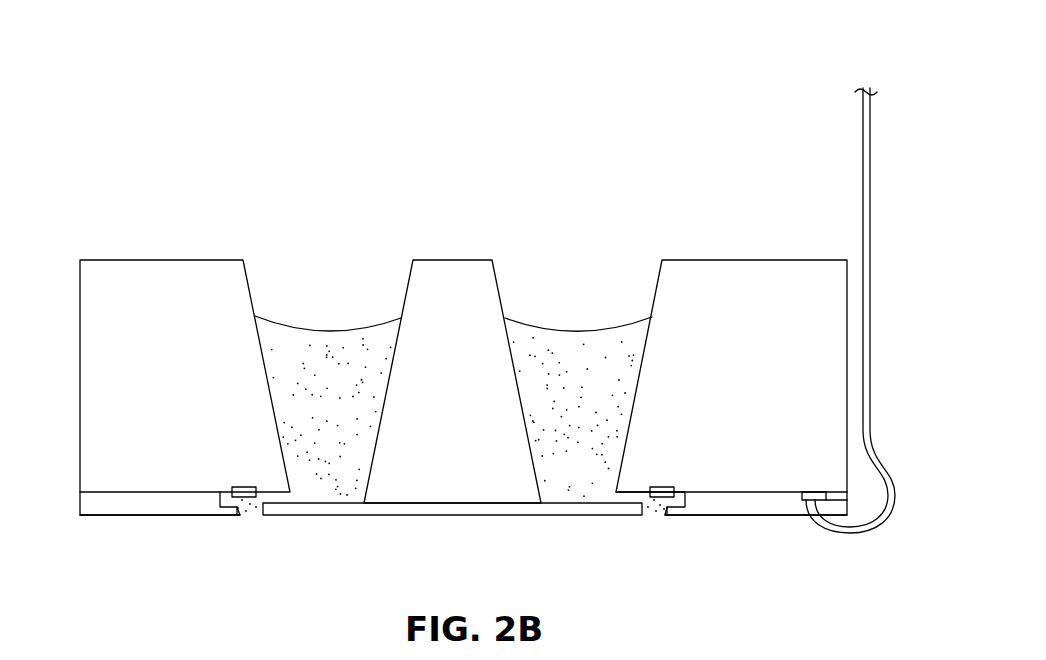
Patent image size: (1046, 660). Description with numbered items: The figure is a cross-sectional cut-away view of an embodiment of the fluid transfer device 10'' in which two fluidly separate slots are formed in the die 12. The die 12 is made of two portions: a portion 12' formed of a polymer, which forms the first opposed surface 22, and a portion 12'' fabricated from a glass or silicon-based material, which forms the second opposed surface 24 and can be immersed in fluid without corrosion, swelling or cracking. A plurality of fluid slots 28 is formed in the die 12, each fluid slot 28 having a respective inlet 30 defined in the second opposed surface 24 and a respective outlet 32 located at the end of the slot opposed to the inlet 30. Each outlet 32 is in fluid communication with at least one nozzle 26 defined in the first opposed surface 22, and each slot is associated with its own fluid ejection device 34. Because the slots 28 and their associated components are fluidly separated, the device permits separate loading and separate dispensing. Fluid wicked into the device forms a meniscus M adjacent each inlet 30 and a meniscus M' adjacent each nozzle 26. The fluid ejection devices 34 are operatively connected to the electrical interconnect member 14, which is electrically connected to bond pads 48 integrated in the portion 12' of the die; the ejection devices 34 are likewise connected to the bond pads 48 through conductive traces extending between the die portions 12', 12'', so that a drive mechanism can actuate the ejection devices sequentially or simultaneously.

The fluid transfer device 10'' is at (795, 64).
The die 12 is at (465, 349).
The die portion 12' is at (463, 547).
The die portion 12'' is at (501, 381).
The electrical interconnect member 14 is at (863, 183).
The first opposed surface 22 is at (128, 515).
The second opposed surface 24 is at (128, 260).
The nozzle 26 is at (245, 515).
The fluid slot 28 is at (263, 353).
The inlet 30 is at (275, 262).
The outlet 32 is at (292, 496).
The fluid ejection device 34 is at (245, 487).
The bond pad 48 is at (803, 500).
The meniscus M is at (453, 359).
The meniscus M' is at (451, 548).